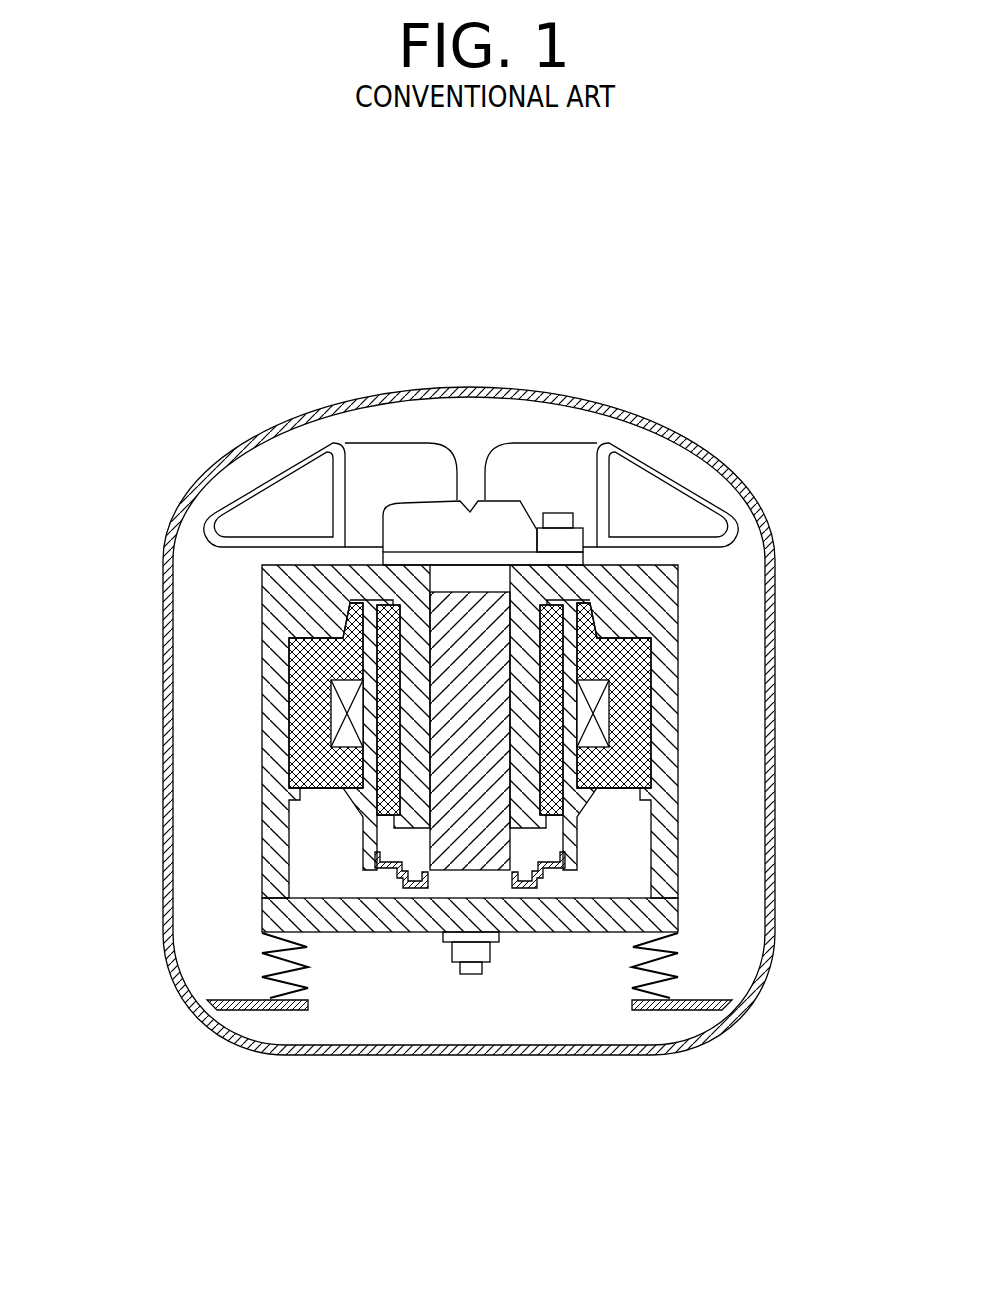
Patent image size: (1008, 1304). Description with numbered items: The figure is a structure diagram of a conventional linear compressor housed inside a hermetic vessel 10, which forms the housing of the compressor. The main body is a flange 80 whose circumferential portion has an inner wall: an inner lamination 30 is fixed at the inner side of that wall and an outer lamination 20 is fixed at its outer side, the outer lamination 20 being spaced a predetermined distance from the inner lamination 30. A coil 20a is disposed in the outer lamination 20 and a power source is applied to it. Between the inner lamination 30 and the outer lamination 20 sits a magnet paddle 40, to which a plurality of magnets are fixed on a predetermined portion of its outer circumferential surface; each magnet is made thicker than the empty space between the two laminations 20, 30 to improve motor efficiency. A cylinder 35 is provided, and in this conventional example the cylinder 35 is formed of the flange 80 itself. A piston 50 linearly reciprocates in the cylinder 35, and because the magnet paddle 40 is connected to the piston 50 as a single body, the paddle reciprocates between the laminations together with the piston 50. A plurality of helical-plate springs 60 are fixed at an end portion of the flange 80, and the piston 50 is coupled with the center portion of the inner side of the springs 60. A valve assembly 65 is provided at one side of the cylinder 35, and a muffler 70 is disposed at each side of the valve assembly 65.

The hermetic vessel 10 is at (688, 443).
The muffler 70 is at (265, 490).
The valve assembly 65 is at (510, 510).
The cylinder 35 is at (512, 575).
The flange 80 is at (668, 588).
The piston 50 is at (450, 838).
The outer lamination 20 is at (652, 653).
The coil 20a is at (338, 712).
The inner lamination 30 is at (553, 708).
The magnet paddle 40 is at (572, 843).
The helical-plate spring 60 is at (553, 930).